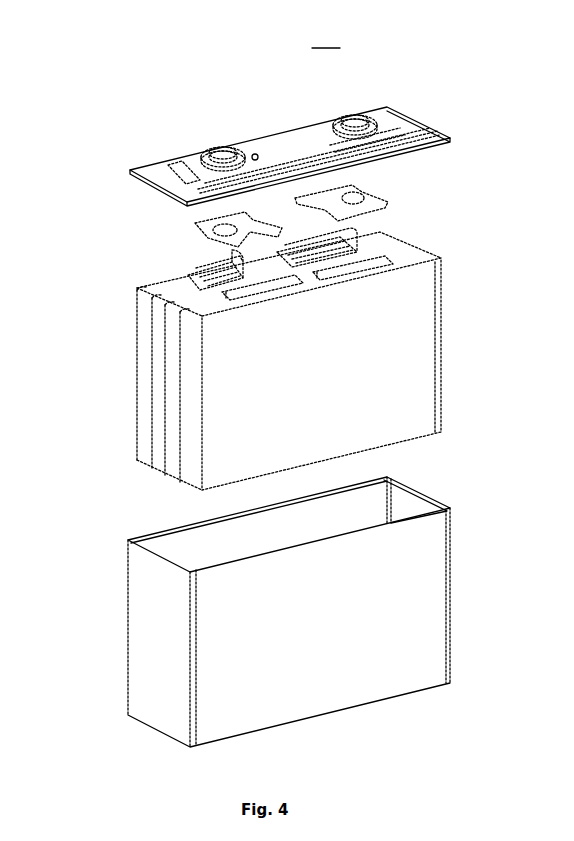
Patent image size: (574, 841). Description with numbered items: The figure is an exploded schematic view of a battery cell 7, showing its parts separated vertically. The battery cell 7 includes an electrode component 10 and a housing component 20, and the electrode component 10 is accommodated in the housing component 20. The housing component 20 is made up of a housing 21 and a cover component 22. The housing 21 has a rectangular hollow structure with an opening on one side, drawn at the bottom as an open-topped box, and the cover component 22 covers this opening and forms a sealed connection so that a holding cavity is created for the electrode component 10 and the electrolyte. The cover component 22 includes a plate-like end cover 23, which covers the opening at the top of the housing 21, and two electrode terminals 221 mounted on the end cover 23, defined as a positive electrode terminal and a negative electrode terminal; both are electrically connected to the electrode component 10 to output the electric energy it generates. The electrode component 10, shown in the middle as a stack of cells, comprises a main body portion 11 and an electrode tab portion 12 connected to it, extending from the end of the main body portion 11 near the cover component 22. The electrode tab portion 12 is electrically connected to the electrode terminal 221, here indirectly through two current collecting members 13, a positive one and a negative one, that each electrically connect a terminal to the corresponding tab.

The battery cell 7 is at (326, 39).
The electrode component 10 is at (330, 349).
The main body portion 11 is at (418, 417).
The electrode tab portion 12 is at (232, 265).
The current collecting member 13 is at (195, 223).
The housing component 20 is at (60, 580).
The housing 21 is at (437, 587).
The cover component 22 is at (249, 336).
The end cover 23 is at (158, 170).
The electrode terminal 221 is at (223, 152).